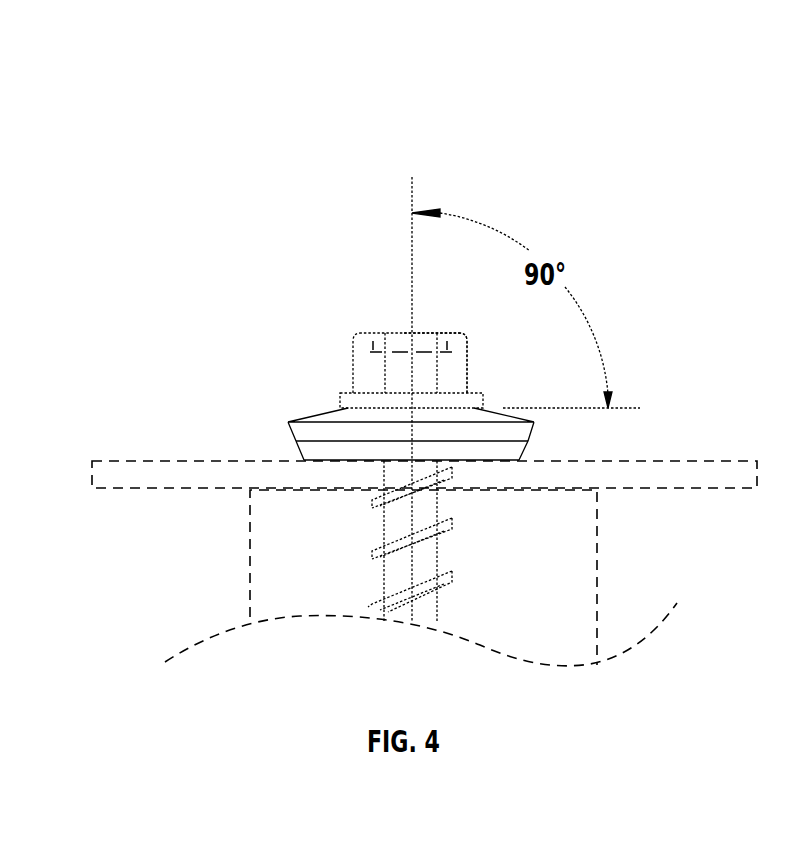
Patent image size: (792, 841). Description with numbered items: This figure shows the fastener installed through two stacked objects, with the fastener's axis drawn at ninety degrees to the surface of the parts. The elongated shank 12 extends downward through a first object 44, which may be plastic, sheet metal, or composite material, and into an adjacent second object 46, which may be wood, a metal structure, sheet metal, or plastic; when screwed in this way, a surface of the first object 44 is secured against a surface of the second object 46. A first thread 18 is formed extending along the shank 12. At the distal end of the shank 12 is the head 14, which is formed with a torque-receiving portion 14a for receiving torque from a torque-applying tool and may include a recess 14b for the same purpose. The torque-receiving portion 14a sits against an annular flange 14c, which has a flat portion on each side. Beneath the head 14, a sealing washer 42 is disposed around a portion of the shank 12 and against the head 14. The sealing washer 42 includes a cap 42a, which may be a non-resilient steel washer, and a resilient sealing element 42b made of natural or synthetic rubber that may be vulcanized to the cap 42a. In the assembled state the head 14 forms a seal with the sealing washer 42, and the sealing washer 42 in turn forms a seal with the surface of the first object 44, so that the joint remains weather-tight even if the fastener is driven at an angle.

The shank 12 is at (428, 556).
The head 14 is at (368, 301).
The torque-receiving portion 14a is at (370, 360).
The recess 14b is at (430, 338).
The annular flange 14c is at (460, 404).
The first thread 18 is at (387, 552).
The sealing washer 42 is at (568, 437).
The cap 42a is at (337, 428).
The resilient sealing element 42b is at (294, 453).
The first object 44 is at (127, 485).
The second object 46 is at (293, 538).